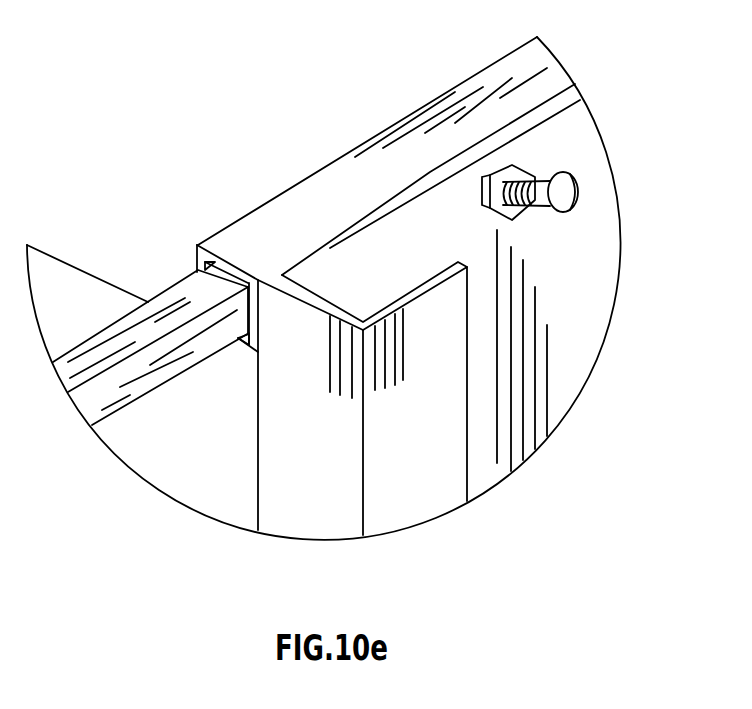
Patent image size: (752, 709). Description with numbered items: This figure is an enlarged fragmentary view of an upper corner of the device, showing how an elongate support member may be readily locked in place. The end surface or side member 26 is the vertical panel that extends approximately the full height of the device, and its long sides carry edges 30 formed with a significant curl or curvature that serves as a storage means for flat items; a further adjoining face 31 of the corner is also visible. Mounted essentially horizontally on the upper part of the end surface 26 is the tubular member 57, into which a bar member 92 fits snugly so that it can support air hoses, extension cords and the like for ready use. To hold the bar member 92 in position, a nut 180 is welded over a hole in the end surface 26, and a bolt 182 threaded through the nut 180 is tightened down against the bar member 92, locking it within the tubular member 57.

The end surface or side member 26 is at (572, 307).
The edges 30 is at (432, 475).
The front wall of post 31 is at (308, 507).
The tubular member 57 is at (295, 205).
The member 92 is at (210, 293).
The nut 180 is at (515, 173).
The bolt 182 is at (563, 187).